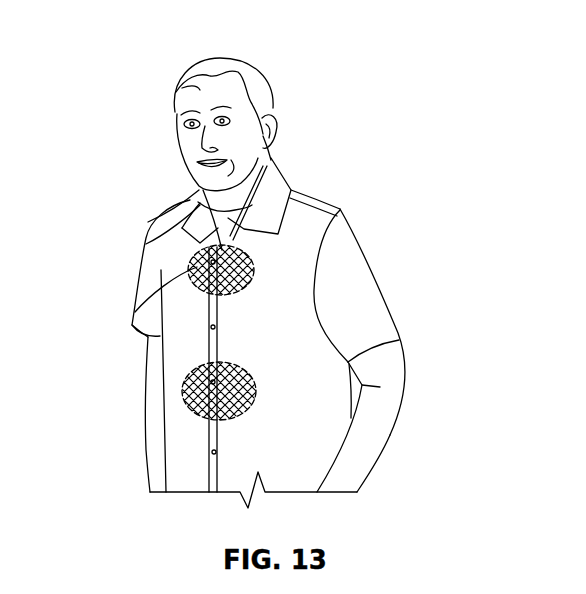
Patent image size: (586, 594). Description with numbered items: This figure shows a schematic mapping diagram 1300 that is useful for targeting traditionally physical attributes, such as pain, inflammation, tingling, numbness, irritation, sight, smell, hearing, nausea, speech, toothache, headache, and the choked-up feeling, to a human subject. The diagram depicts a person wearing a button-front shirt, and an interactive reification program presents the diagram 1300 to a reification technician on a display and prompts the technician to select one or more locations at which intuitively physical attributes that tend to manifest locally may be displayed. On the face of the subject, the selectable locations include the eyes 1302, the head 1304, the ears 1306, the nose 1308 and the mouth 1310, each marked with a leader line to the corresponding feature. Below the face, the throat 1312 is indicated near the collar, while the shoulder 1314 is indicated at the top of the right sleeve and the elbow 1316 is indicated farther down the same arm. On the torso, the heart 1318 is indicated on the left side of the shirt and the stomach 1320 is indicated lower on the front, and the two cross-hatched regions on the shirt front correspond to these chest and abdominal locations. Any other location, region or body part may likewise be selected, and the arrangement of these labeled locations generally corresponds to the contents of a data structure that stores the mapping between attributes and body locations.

The schematic mapping diagram 1300 is at (131, 41).
The eyes 1302 is at (188, 120).
The head 1304 is at (180, 88).
The ears 1306 is at (272, 120).
The nose 1308 is at (203, 140).
The mouth 1310 is at (204, 167).
The throat 1312 is at (147, 243).
The shoulder 1314 is at (342, 222).
The elbow 1316 is at (396, 368).
The heart 1318 is at (135, 311).
The stomach 1320 is at (238, 387).